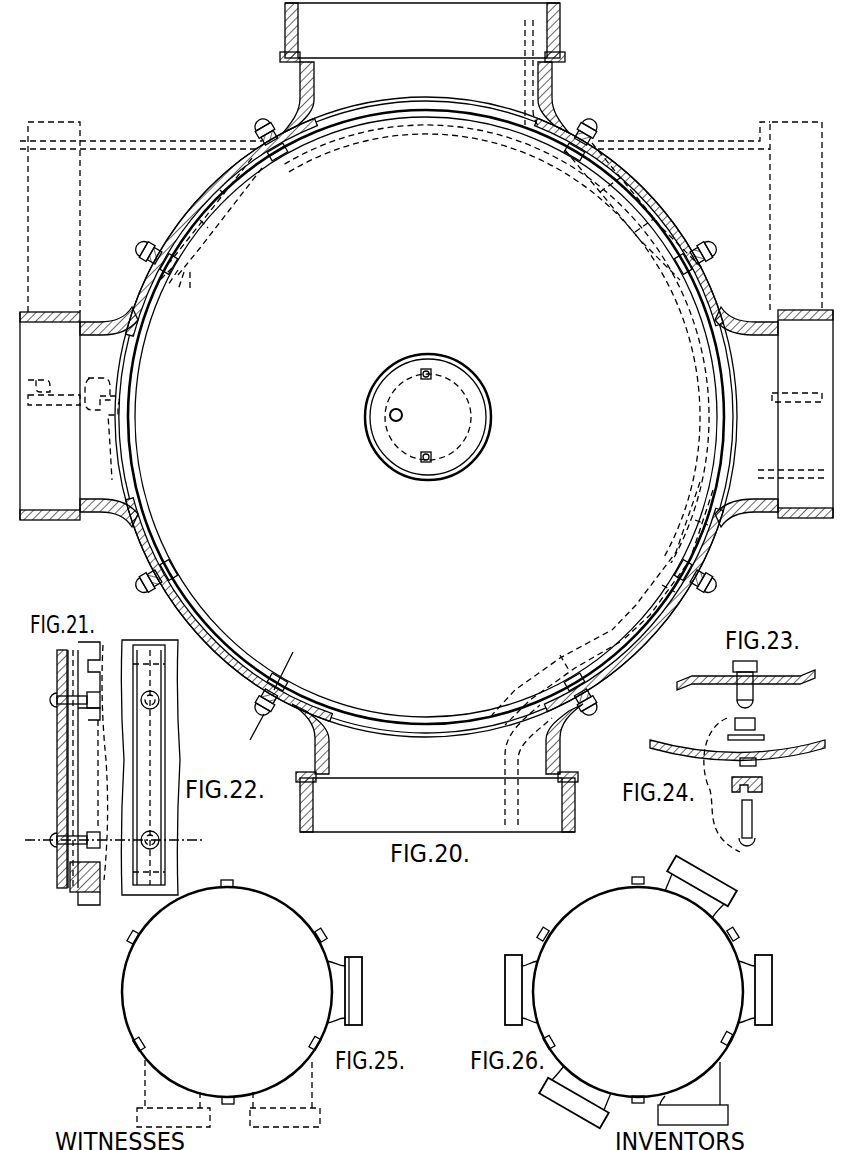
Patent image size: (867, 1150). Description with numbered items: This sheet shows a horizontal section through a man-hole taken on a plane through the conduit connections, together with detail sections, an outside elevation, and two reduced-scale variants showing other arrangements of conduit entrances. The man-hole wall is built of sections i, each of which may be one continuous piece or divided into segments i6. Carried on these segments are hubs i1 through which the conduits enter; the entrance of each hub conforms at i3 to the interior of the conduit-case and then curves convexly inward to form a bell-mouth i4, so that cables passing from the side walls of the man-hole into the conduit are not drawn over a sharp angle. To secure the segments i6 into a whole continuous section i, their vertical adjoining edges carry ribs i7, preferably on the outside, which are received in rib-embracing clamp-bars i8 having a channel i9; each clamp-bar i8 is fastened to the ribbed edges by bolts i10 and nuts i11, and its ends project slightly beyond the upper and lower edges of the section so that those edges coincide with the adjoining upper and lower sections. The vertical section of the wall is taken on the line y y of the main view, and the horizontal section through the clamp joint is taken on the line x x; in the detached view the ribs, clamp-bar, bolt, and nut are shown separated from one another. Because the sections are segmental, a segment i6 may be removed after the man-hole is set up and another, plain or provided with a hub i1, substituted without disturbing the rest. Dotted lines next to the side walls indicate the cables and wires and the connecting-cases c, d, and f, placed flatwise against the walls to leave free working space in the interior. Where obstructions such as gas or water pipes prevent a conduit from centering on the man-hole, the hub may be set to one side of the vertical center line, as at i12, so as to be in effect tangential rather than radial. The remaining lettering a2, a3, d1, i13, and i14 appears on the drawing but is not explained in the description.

In FIG. 20, the hub i1 is at (426, 417).
In FIG. 25, the hub i1 is at (353, 991).
In FIG. 26, the hub i1 is at (638, 992).
In FIG. 20, the section i is at (662, 184).
In FIG. 21, the section i is at (110, 740).
In FIG. 20, the conduit-conforming entrance portion i3 is at (312, 66).
In FIG. 20, the bell-mouth i4 is at (110, 452).
In FIG. 25, the bell-mouth i4 is at (337, 1013).
In FIG. 26, the bell-mouth i4 is at (541, 964).
In FIG. 20, the segment i6 is at (143, 540).
In FIG. 21, the segment i6 is at (98, 760).
In FIG. 23, the segment i6 is at (706, 684).
In FIG. 24, the segment i6 is at (737, 750).
In FIG. 25, the segment i6 is at (277, 897).
In FIG. 26, the segment i6 is at (584, 902).
In FIG. 20, the rib i7 is at (140, 576).
In FIG. 21, the rib i7 is at (66, 766).
In FIG. 24, the rib i7 is at (758, 761).
In FIG. 25, the rib i7 is at (229, 1100).
In FIG. 26, the rib i7 is at (639, 886).
In FIG. 20, the clamp-bar i8 is at (156, 612).
In FIG. 21, the clamp-bar i8 is at (60, 792).
In FIG. 22, the clamp-bar i8 is at (156, 632).
In FIG. 24, the clamp-bar i8 is at (763, 788).
In FIG. 25, the clamp-bar i8 is at (326, 937).
In FIG. 26, the clamp-bar i8 is at (545, 935).
In FIG. 21, the channel i9 is at (70, 890).
In FIG. 24, the channel i9 is at (745, 782).
In FIG. 20, the bolt i10 is at (136, 590).
In FIG. 22, the bolt i10 is at (162, 700).
In FIG. 23, the bolt i10 is at (755, 698).
In FIG. 24, the bolt i10 is at (753, 827).
In FIG. 20, the nut i11 is at (172, 575).
In FIG. 21, the nut i11 is at (84, 712).
In FIG. 23, the nut i11 is at (757, 667).
In FIG. 24, the nut i11 is at (746, 729).
In FIG. 20, the offset hub i12 is at (112, 150).
In FIG. 25, the offset hub i12 is at (228, 1093).
In FIG. 26, the offset hub i12 is at (693, 1093).
In FIG. 20, the opening i13 is at (124, 373).
In FIG. 20, the opening i14 is at (124, 396).
In FIG. 21, the opening i14 is at (54, 700).
In FIG. 20, the lead-in line a2 is at (505, 768).
In FIG. 20, the annular line a3 is at (402, 124).
In FIG. 20, the connecting-case c is at (556, 678).
In FIG. 20, the connecting-case d is at (670, 572).
In FIG. 20, the sector d1 is at (640, 220).
In FIG. 20, the connecting-case f is at (218, 228).
In FIG. 21, the section line x x is at (116, 841).
In FIG. 20, the section line y y is at (269, 695).